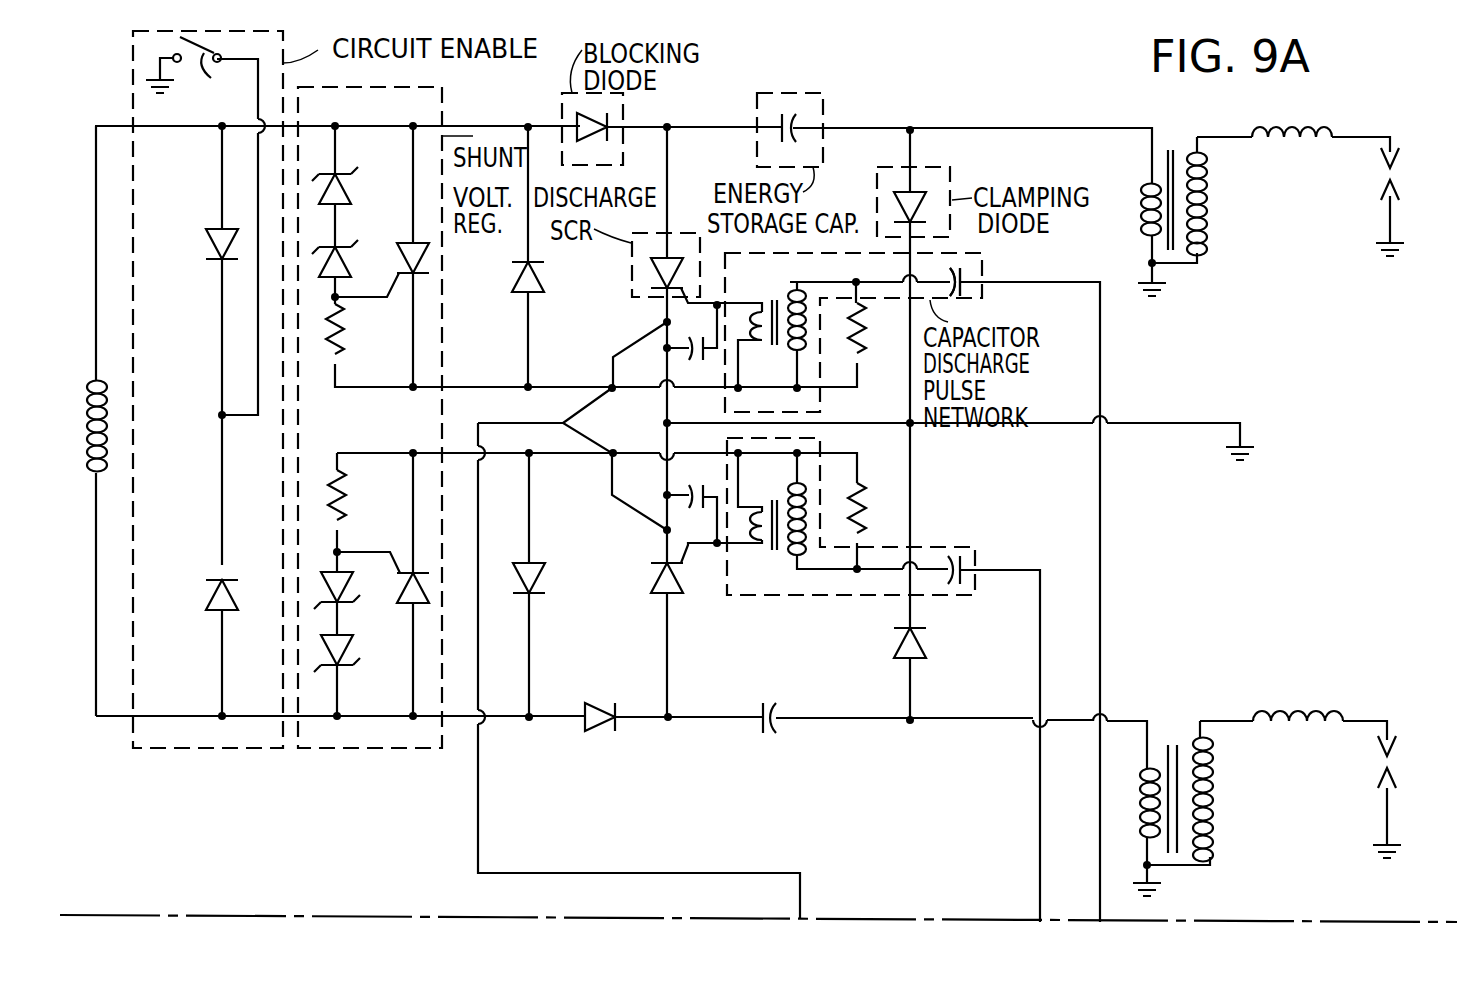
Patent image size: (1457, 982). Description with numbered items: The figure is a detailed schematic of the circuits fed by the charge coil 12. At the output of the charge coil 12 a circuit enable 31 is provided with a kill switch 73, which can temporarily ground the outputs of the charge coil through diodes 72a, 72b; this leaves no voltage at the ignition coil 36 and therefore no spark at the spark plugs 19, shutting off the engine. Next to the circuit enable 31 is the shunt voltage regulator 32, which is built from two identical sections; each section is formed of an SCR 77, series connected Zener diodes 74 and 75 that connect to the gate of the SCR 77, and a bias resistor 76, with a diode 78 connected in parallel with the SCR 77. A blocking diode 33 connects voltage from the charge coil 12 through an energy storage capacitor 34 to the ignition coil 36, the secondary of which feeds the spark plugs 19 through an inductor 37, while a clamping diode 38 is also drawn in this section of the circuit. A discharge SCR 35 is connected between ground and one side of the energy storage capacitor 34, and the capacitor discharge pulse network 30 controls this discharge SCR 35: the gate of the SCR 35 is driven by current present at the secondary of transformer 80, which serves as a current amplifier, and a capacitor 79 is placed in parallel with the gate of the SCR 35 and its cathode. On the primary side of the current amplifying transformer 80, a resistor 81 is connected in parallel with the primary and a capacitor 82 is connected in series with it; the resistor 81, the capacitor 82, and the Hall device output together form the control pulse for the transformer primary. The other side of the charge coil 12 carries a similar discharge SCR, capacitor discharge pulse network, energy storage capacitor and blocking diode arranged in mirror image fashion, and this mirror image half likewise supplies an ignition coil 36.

The charge coil 12 is at (110, 398).
The spark plugs 19 is at (1396, 177).
The capacitor discharge pulse network 30 is at (982, 292).
The circuit enable 31 is at (283, 40).
The shunt voltage regulator 32 is at (442, 104).
The blocking diode 33 is at (562, 107).
The energy storage capacitor 34 is at (823, 99).
The discharge SCR 35 is at (632, 283).
The ignition coil 36 is at (1177, 250).
The inductor 37 is at (1300, 150).
The clamping diode 38 is at (950, 177).
The diode 72a is at (207, 237).
The diode 72b is at (207, 589).
The kill switch 73 is at (190, 74).
The Zener diode 74 is at (356, 190).
The Zener diode 75 is at (351, 259).
The bias resistor 76 is at (352, 340).
The SCR 77 is at (432, 262).
The diode 78 is at (515, 297).
The capacitor 79 is at (692, 362).
The transformer 80 is at (767, 307).
The resistor 81 is at (862, 337).
The capacitor 82 is at (940, 272).